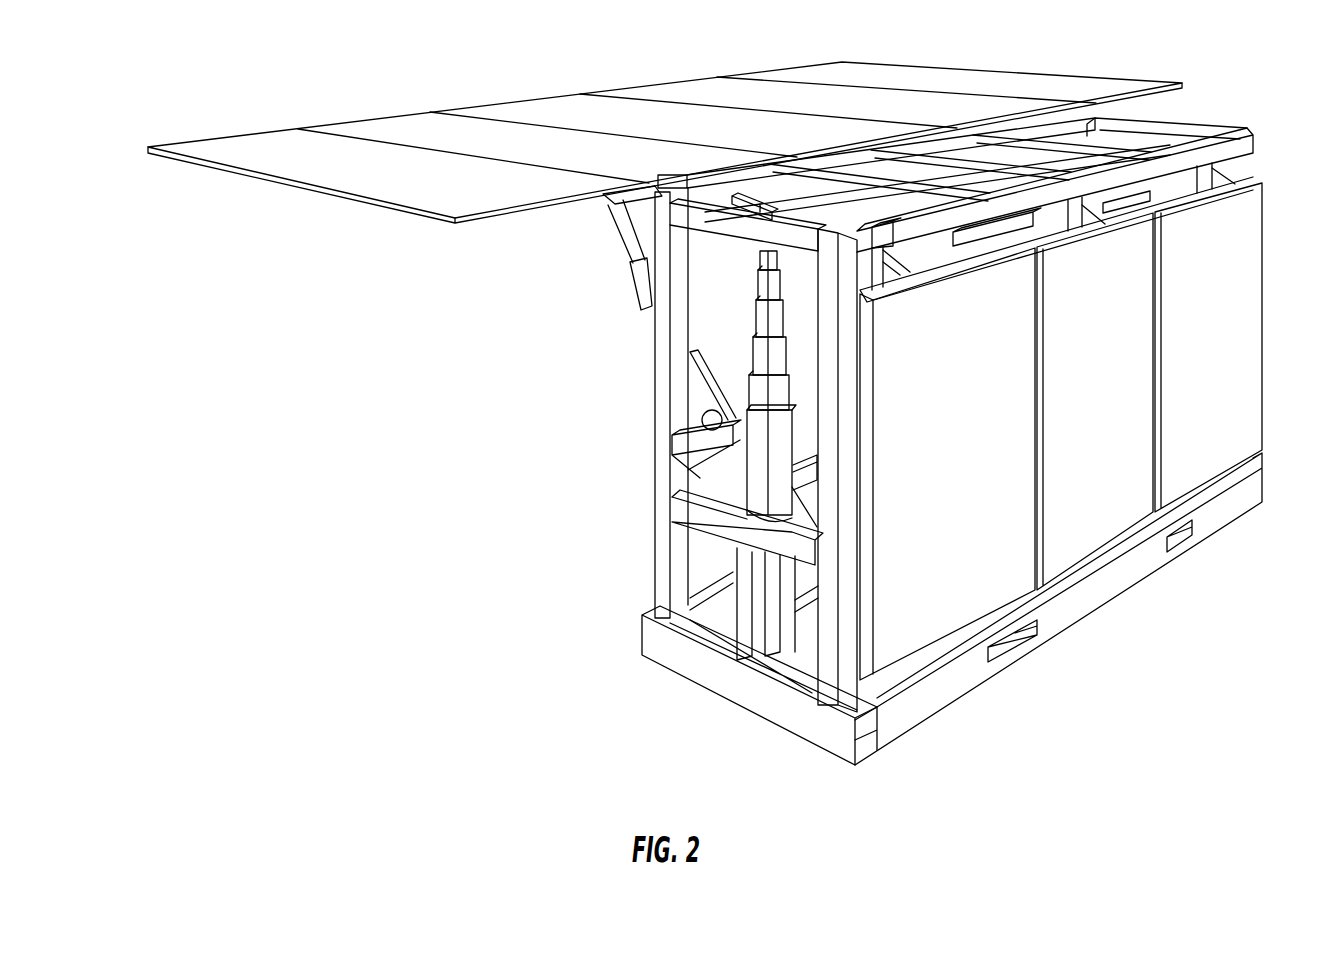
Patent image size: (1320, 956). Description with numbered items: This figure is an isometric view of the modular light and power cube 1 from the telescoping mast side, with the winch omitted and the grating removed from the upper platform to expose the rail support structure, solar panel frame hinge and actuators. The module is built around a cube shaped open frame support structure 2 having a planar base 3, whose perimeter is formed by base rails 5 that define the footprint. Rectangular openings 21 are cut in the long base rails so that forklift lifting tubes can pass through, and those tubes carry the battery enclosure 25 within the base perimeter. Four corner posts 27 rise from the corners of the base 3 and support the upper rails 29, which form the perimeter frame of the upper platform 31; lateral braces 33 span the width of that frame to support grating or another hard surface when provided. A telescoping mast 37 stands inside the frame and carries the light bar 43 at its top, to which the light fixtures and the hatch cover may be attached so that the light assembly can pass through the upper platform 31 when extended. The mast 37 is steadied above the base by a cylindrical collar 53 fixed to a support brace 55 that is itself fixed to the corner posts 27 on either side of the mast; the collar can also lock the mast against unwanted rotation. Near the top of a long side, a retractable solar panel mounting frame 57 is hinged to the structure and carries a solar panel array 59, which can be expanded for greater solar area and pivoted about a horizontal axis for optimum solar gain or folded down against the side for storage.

The portable structure system 1 is at (385, 487).
The open frame support structure 2 is at (588, 385).
The base 3 is at (762, 765).
The base rails 5 is at (682, 665).
The rectangular openings 21 is at (1012, 648).
The battery enclosure 25 is at (832, 270).
The corner posts 27 is at (658, 536).
The upper rails 29 is at (732, 226).
The upper platform 31 is at (1212, 112).
The lateral braces 33 is at (988, 168).
The telescoping mast 37 is at (762, 352).
The light bar 43 is at (776, 204).
The cylindrical collar 53 is at (752, 508).
The support brace 55 is at (728, 530).
The solar panel mounting frames 57 is at (610, 201).
The solar panel arrays 59 is at (266, 150).